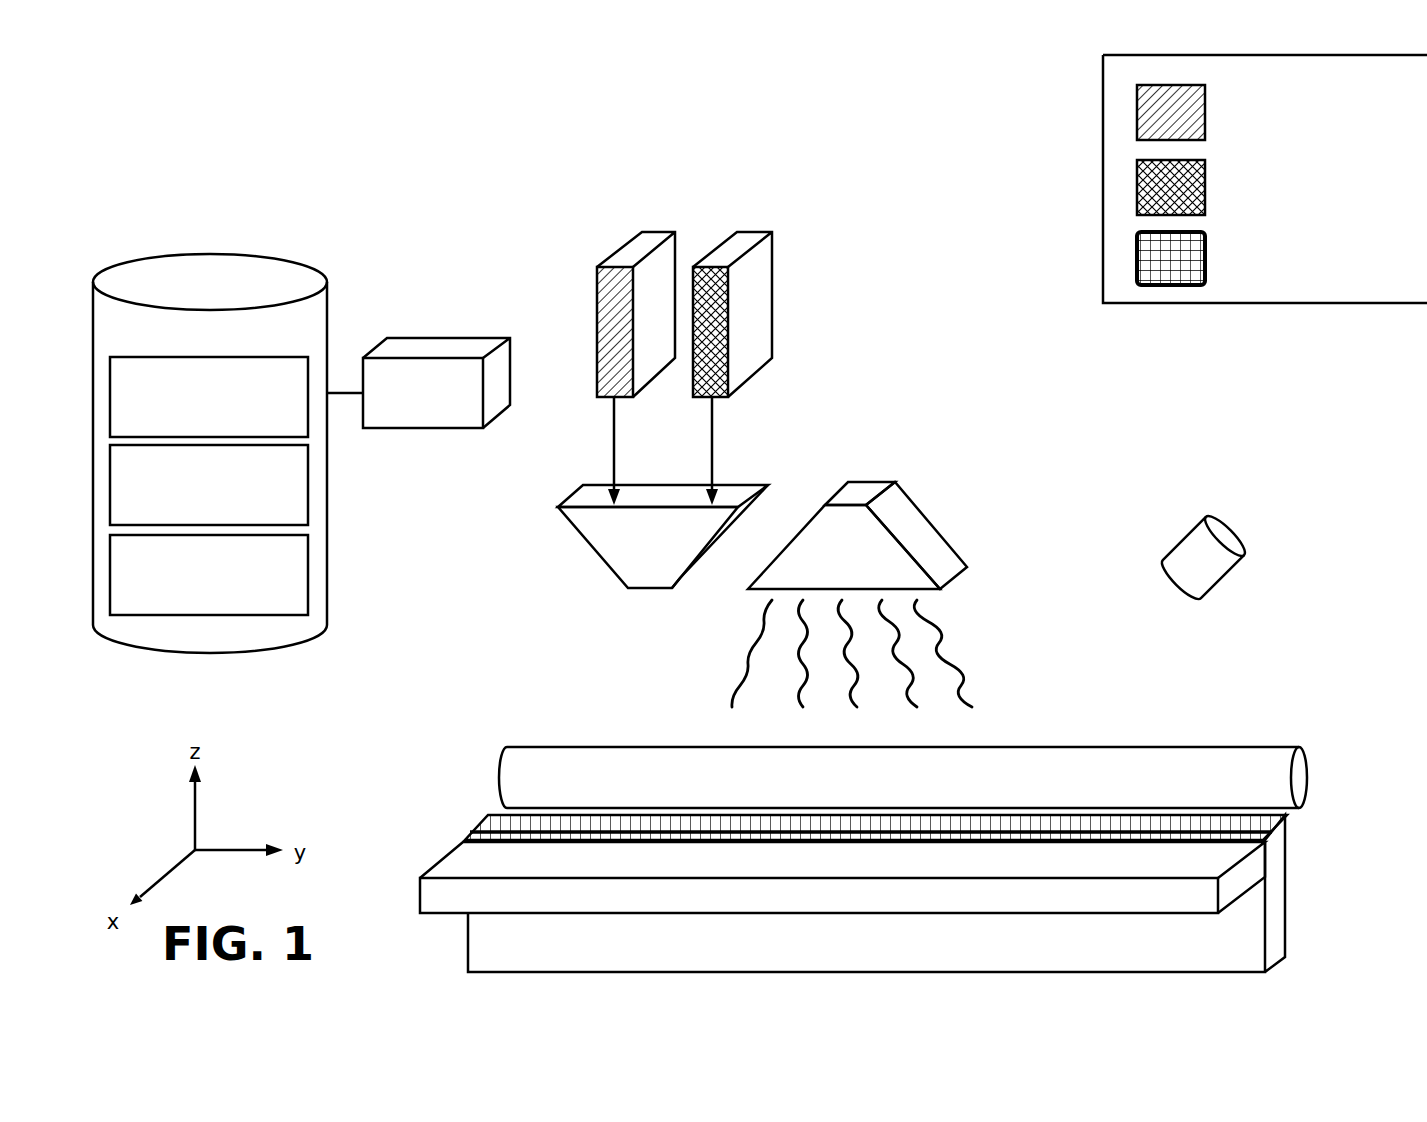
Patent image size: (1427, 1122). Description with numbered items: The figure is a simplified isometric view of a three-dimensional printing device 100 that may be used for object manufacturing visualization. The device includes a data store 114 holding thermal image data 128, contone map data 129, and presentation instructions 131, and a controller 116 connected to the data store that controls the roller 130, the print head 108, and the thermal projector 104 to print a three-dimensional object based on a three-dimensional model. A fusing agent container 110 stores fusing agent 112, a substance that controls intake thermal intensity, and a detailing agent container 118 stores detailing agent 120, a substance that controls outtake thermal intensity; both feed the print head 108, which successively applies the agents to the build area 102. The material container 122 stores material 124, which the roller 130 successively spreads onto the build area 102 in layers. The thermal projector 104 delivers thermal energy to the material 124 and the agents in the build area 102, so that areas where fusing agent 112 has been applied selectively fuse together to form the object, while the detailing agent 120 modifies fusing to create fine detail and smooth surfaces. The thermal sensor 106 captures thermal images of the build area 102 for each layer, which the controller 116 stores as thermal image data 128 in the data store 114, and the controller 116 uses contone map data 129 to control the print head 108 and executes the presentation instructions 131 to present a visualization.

The 3D printing device 100 is at (240, 172).
The build area 102 is at (842, 877).
The thermal projector 104 is at (925, 538).
The thermal sensor 106 is at (1228, 540).
The print head 108 is at (597, 558).
The fusing agent container 110 is at (597, 302).
The fusing agent 112 is at (1266, 112).
The data store 114 is at (210, 453).
The controller 116 is at (418, 383).
The detailing agent container 118 is at (758, 302).
The detailing agent 120 is at (1273, 187).
The material container 122 is at (1285, 890).
The material 124 is at (929, 536).
The thermal image data 128 is at (209, 397).
The contone map data 129 is at (209, 485).
The roller 130 is at (1237, 745).
The presentation instructions 131 is at (209, 575).